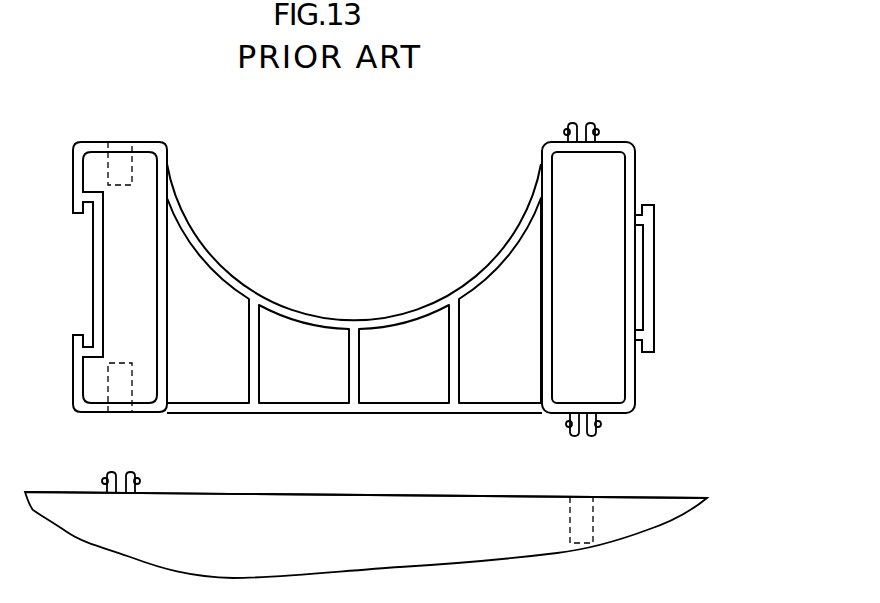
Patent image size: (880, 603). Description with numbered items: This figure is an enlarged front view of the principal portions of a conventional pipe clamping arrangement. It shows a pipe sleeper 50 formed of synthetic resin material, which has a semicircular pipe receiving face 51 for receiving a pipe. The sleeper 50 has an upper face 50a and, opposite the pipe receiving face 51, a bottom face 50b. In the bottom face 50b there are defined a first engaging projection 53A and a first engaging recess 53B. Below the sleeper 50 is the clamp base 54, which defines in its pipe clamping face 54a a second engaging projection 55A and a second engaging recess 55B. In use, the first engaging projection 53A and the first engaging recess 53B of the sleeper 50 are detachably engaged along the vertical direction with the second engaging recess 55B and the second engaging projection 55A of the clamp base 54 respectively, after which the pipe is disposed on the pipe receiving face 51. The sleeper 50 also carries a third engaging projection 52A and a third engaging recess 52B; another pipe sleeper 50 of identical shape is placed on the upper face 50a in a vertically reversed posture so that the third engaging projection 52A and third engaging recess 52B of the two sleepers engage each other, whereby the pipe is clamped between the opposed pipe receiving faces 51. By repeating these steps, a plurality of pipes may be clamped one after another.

The pipe sleeper 50 is at (363, 289).
The upper face 50a is at (147, 141).
The bottom face 50b is at (496, 411).
The pipe receiving face 51 is at (253, 287).
The third engaging projection 52A is at (593, 125).
The third engaging recess 52B is at (108, 183).
The first engaging projection 53A is at (597, 423).
The first engaging recess 53B is at (108, 382).
The clamp base 54 is at (557, 552).
The pipe clamping face 54a is at (663, 495).
The second engaging projection 55A is at (132, 470).
The second engaging recess 55B is at (593, 517).